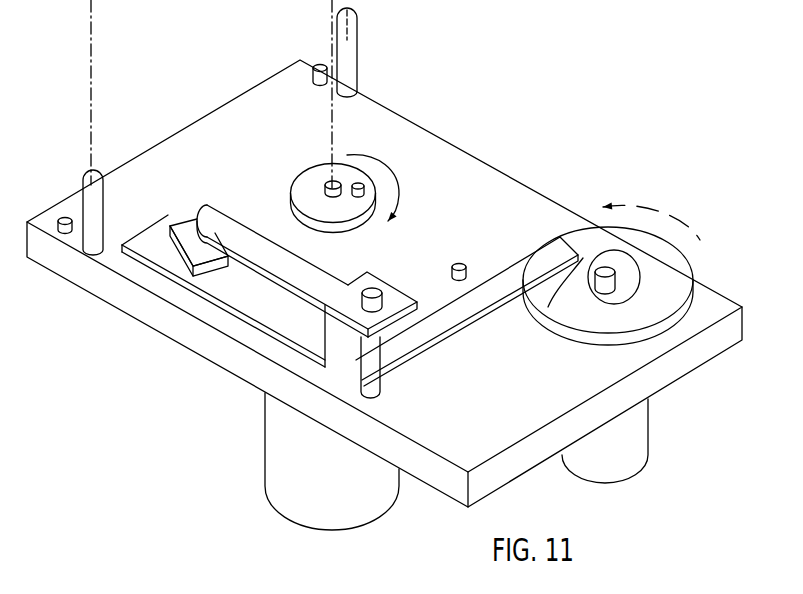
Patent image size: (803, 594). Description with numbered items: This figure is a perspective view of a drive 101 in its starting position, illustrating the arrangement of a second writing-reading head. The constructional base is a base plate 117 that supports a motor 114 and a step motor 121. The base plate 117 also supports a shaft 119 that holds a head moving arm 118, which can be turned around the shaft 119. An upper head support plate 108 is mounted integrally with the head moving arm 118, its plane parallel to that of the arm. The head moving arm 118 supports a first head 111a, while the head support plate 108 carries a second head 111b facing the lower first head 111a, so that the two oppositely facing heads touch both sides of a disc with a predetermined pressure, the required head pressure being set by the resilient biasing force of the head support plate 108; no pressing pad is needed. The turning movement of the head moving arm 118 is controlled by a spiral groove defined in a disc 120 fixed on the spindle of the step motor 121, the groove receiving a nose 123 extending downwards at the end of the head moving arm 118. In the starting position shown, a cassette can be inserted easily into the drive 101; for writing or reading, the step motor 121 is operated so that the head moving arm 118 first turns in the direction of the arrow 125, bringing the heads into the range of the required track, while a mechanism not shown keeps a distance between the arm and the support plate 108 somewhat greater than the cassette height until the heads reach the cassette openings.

The drive 101 is at (133, 358).
The head support plate 108 is at (240, 313).
The first head 111a is at (190, 278).
The second head 111b is at (173, 221).
The motor 114 is at (313, 513).
The base plate 117 is at (498, 478).
The head moving arm 118 is at (288, 270).
The shaft 119 is at (383, 390).
The disc 120 is at (678, 272).
The step motor 121 is at (628, 467).
The nose 123 is at (583, 258).
The arrow 125 is at (317, 177).